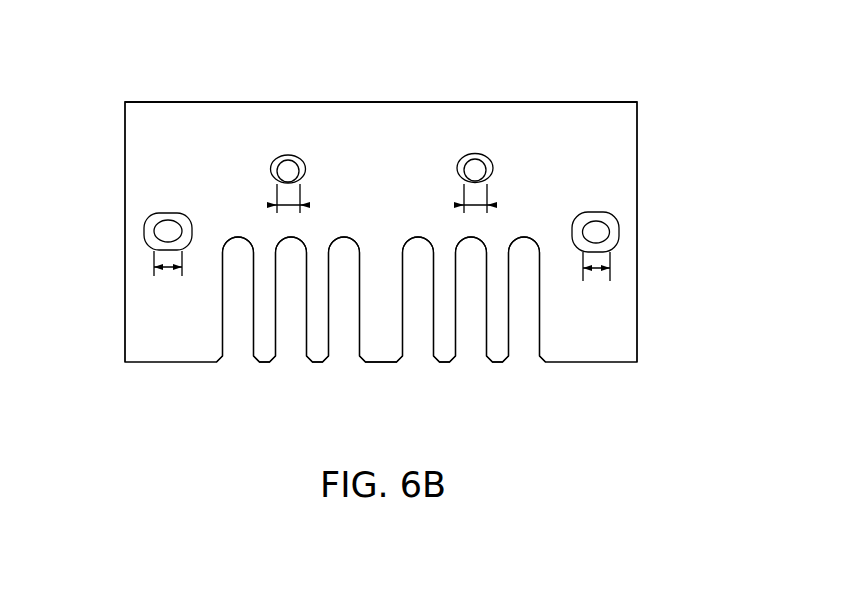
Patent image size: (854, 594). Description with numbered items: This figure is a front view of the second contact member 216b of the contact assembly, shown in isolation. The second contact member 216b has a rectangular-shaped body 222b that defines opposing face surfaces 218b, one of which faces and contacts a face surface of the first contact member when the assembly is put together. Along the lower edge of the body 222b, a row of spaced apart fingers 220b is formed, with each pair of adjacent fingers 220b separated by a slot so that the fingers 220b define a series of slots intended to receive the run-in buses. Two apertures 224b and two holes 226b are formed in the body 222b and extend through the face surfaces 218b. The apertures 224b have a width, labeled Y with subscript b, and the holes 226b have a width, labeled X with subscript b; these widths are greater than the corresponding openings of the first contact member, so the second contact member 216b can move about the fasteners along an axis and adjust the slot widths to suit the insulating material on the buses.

The second contact member 216b is at (653, 99).
The face surface 218b is at (523, 118).
The fingers 220b is at (497, 353).
The body 222b is at (181, 138).
The apertures 224b is at (455, 158).
The holes 226b is at (161, 230).